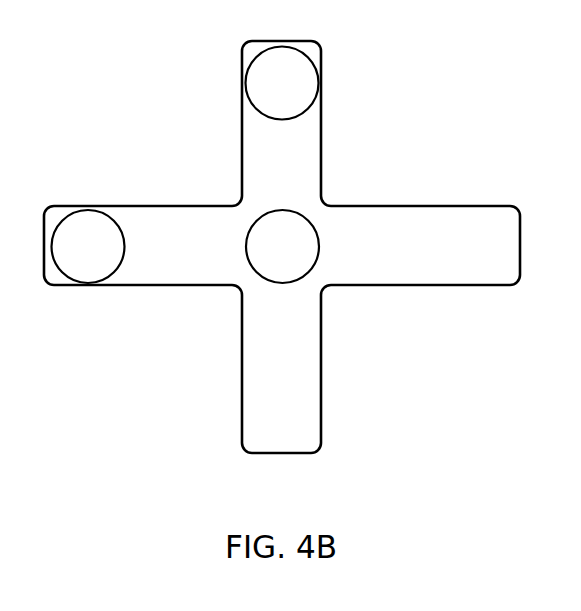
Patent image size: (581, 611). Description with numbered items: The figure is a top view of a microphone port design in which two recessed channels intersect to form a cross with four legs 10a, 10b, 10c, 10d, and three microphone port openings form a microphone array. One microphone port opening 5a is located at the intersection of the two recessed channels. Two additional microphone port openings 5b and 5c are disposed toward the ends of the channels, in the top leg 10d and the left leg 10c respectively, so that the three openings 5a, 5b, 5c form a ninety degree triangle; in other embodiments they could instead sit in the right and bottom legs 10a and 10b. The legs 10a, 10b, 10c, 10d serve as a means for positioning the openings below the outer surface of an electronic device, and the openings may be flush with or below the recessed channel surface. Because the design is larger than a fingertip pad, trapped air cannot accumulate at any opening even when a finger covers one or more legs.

The microphone port opening 5a is at (295, 237).
The microphone port opening 5b is at (298, 69).
The microphone port opening 5c is at (85, 270).
The leg 10a is at (463, 215).
The leg 10b is at (312, 380).
The leg 10c is at (148, 278).
The leg 10d is at (315, 142).